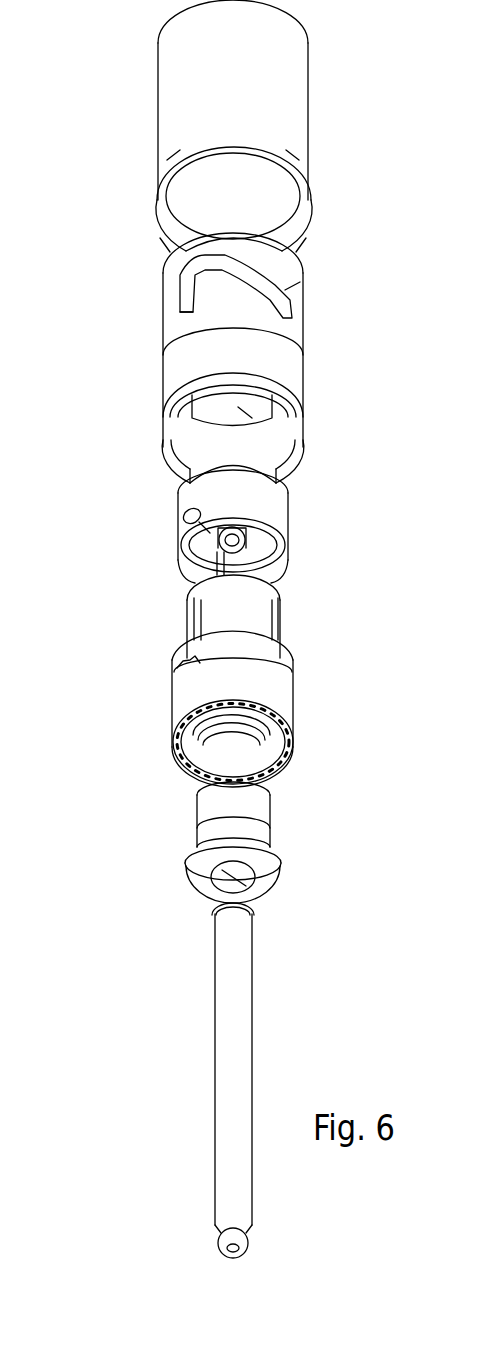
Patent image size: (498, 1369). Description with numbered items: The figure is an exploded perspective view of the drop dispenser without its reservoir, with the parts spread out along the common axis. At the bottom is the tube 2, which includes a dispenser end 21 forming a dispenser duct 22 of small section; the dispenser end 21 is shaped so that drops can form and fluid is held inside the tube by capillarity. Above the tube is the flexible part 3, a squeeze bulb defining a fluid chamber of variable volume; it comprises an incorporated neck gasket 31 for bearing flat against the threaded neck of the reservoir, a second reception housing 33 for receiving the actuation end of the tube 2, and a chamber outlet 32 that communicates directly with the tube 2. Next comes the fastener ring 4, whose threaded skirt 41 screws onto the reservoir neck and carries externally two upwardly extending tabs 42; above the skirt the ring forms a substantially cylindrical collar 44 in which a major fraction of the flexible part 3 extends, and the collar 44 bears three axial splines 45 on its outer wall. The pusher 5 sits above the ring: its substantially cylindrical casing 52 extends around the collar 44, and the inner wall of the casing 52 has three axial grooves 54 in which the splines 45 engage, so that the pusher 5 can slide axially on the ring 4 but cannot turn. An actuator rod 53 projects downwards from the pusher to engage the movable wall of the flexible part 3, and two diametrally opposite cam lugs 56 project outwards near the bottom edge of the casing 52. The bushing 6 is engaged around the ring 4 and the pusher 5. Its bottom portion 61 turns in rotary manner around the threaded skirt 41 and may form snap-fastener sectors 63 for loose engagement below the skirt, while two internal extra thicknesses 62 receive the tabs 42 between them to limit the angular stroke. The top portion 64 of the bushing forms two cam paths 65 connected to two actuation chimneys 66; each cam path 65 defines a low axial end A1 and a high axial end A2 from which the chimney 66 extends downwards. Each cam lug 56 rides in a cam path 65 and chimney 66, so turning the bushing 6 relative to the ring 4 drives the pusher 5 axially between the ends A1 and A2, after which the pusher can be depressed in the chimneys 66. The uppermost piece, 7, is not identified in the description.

The tube 2 is at (229, 1080).
The dispenser end 21 is at (246, 1240).
The dispenser duct 22 is at (258, 910).
The flexible part 3 is at (223, 851).
The neck gasket 31 is at (200, 885).
The chamber outlet 32 is at (242, 877).
The second reception housing 33 is at (270, 846).
The fastener ring 4 is at (229, 681).
The threaded skirt 41 is at (292, 715).
The tabs 42 is at (182, 661).
The collar 44 is at (278, 605).
The axial splines 45 is at (186, 617).
The pusher 5 is at (230, 539).
The casing 52 is at (278, 511).
The actuator rod 53 is at (255, 550).
The axial grooves 54 is at (180, 563).
The cam lugs 56 is at (178, 521).
The bushing 6 is at (229, 357).
The bottom portion 61 is at (288, 379).
The extra thicknesses 62 is at (285, 430).
The snap-fastener sectors 63 is at (165, 446).
The top portion 64 is at (288, 286).
The cam paths 65 is at (285, 253).
The actuation chimneys 66 is at (178, 305).
The outer sleeve 7 is at (130, 112).
The low axial end A1 is at (292, 310).
The high axial end A2 is at (192, 272).